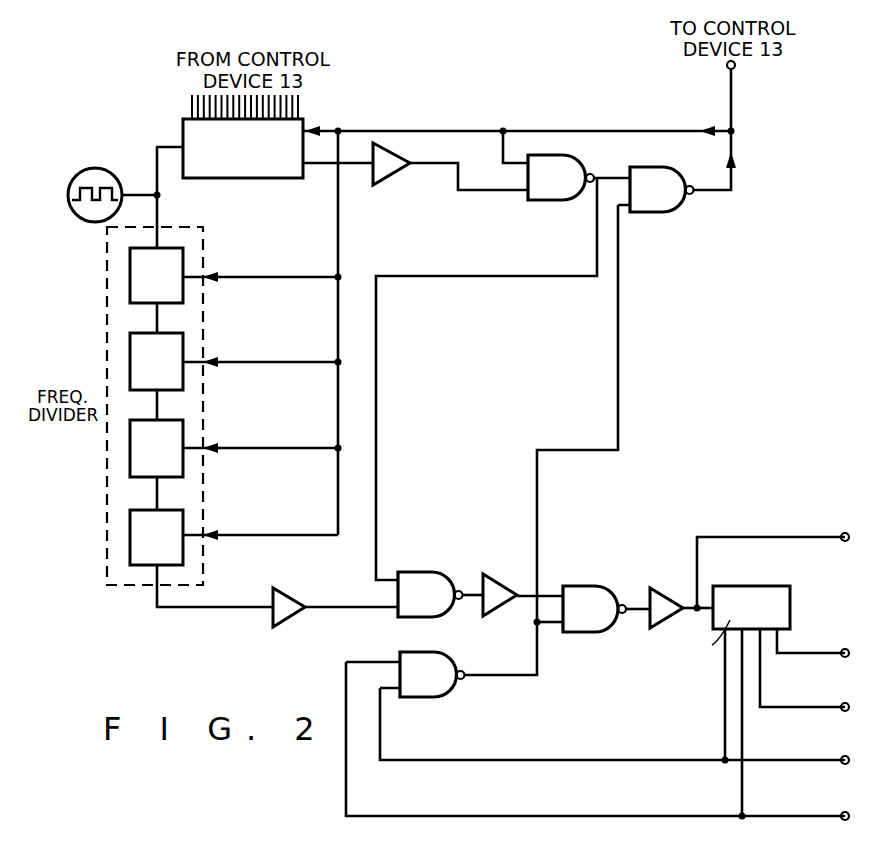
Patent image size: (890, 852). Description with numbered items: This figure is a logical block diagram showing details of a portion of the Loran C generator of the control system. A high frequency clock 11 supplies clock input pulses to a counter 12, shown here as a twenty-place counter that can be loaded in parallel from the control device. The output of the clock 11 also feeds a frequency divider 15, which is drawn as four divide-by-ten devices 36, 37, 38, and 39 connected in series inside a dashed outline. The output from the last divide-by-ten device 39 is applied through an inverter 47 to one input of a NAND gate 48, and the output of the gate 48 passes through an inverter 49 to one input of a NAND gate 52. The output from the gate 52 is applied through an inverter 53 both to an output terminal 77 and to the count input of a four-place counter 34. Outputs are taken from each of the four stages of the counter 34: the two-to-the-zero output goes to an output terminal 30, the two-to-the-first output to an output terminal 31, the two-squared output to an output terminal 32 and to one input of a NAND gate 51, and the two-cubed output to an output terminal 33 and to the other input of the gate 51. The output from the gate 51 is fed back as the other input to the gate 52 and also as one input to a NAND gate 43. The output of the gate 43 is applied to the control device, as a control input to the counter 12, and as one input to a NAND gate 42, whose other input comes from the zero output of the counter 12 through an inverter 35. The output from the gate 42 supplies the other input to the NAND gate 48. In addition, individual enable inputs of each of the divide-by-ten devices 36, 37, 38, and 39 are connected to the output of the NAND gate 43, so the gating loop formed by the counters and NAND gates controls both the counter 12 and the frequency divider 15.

The high frequency clock 11 is at (98, 175).
The counter 12 is at (293, 165).
The frequency divider 15 is at (185, 513).
The divide-by-10 device 36 is at (143, 294).
The divide-by-10 device 37 is at (143, 380).
The divide-by-10 device 38 is at (143, 467).
The divide-by-10 device 39 is at (143, 556).
The inverter 35 is at (388, 165).
The NAND gate 42 is at (565, 170).
The NAND gate 43 is at (663, 178).
The inverter 47 is at (282, 602).
The NAND gate 48 is at (427, 585).
The inverter 49 is at (495, 592).
The NAND gate 51 is at (432, 668).
The NAND gate 52 is at (590, 598).
The inverter 53 is at (660, 610).
The 4-place counter 34 is at (762, 600).
The output terminal 77 is at (845, 533).
The output terminal 30 is at (846, 649).
The output terminal 31 is at (844, 703).
The output terminal 33 is at (845, 756).
The output terminal 32 is at (845, 812).